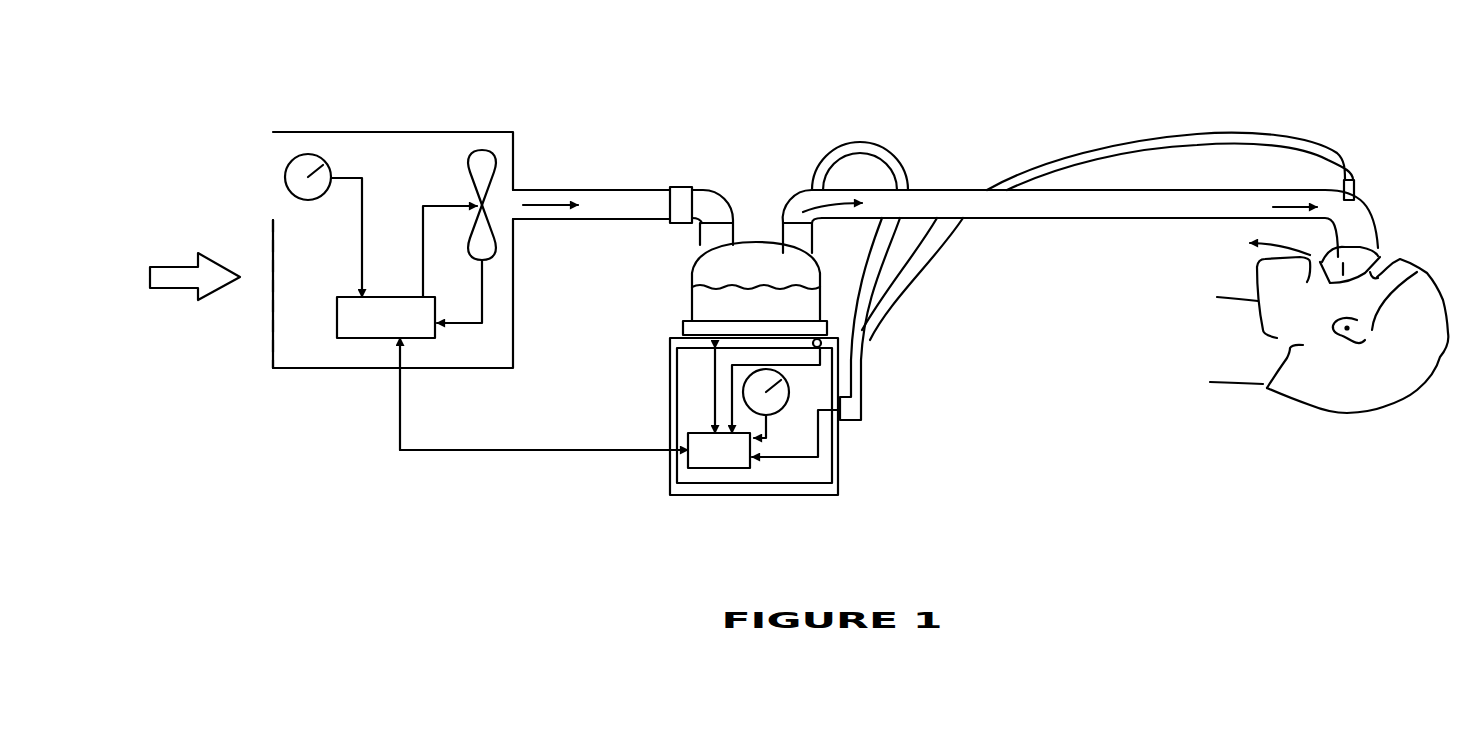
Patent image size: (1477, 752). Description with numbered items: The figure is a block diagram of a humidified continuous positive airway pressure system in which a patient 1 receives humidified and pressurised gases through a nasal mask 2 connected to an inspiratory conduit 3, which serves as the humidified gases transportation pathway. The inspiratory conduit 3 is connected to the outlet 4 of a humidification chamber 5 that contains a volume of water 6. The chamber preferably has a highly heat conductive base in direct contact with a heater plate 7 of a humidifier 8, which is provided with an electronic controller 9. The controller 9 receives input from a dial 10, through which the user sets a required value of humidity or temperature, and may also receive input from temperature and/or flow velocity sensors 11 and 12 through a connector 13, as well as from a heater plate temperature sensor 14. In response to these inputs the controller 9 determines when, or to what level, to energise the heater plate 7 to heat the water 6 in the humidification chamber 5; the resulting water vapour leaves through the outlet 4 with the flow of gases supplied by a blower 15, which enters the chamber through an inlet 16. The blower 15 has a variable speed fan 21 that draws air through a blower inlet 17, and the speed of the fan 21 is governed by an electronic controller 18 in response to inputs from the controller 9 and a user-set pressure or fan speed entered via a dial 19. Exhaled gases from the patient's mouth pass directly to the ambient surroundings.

The patient 1 is at (1305, 405).
The nasal mask 2 is at (1378, 250).
The inspiratory conduit 3 is at (1093, 220).
The outlet 4 is at (780, 220).
The humidification chamber 5 is at (692, 273).
The water 6 is at (756, 301).
The heater plate 7 is at (682, 327).
The humidifier 8 is at (670, 403).
The electronic controller 9 is at (575, 450).
The dial 10 is at (780, 418).
The temperature and/or flow velocity sensor 11 is at (1355, 188).
The temperature and/or flow velocity sensor 12 is at (813, 180).
The connector 13 is at (863, 420).
The heater plate temperature sensor 14 is at (823, 344).
The blower 15 is at (390, 132).
The inlet 16 is at (699, 240).
The blower inlet 17 is at (270, 315).
The electronic controller 18 is at (353, 340).
The dial 19 is at (312, 155).
The variable speed fan 21 is at (482, 150).